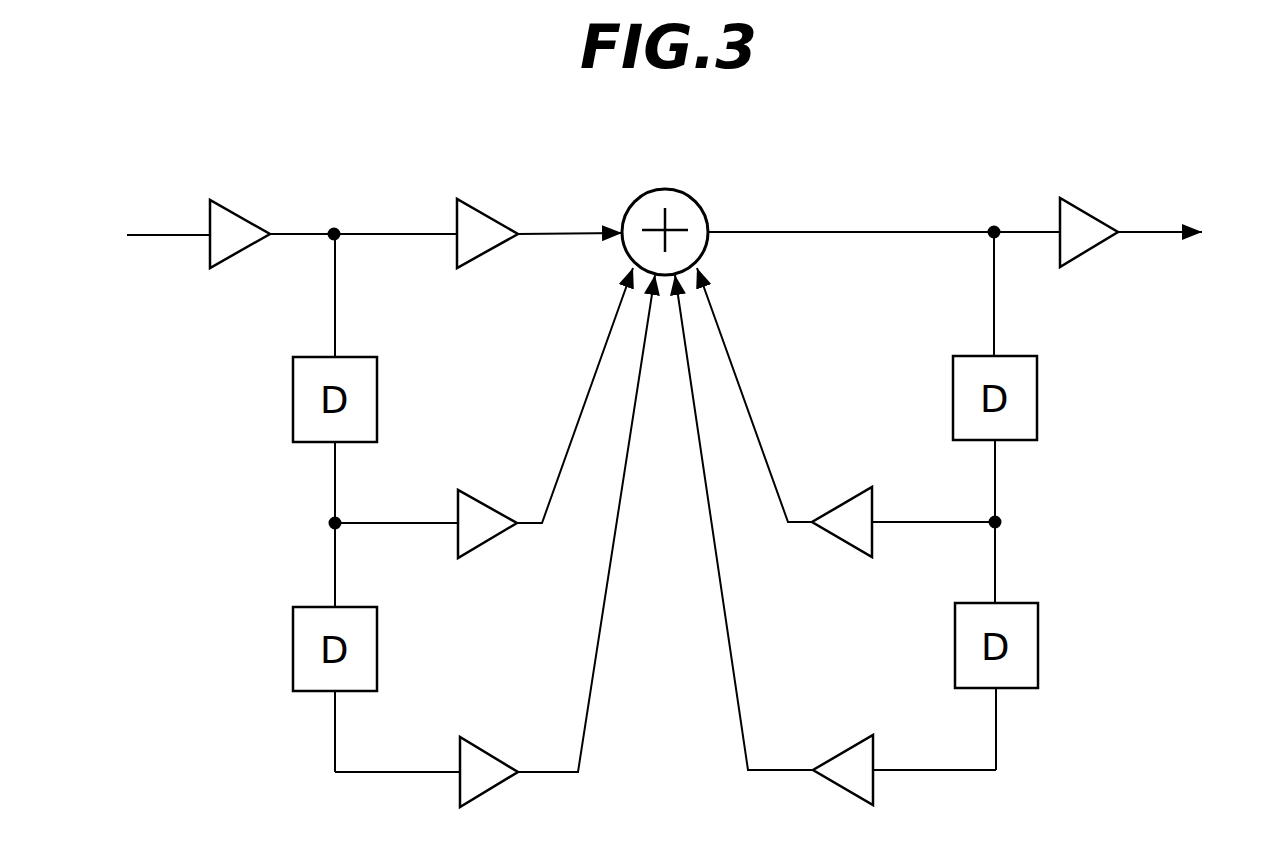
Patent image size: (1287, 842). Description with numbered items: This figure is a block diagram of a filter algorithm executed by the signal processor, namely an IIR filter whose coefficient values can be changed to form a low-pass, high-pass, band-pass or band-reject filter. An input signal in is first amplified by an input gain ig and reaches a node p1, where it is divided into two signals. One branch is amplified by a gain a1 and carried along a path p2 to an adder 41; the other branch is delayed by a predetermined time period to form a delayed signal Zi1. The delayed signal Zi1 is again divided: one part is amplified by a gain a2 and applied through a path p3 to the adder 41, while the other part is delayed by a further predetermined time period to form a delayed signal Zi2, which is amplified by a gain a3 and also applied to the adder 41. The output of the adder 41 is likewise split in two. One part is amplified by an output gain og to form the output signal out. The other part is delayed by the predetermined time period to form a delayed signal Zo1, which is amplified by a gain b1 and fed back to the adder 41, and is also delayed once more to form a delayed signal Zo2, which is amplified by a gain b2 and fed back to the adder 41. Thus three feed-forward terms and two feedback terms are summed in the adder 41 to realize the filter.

The adder 41 is at (693, 197).
The input node after input gain p1 is at (334, 228).
The feedforward path from gain a1 p2 is at (575, 231).
The feedforward path from gain a2 p3 is at (593, 377).
The input gain ig is at (240, 213).
The output gain og is at (1089, 212).
The gain a1 is at (487, 213).
The gain a2 is at (487, 497).
The gain a3 is at (489, 747).
The gain b1 is at (842, 496).
The gain b2 is at (843, 748).
The delayed signal Zi1 is at (361, 525).
The delayed signal Zi2 is at (362, 778).
The delayed signal Zo1 is at (975, 523).
The delayed signal Zo2 is at (976, 776).
The input signal in is at (142, 233).
The output signal out is at (1198, 232).